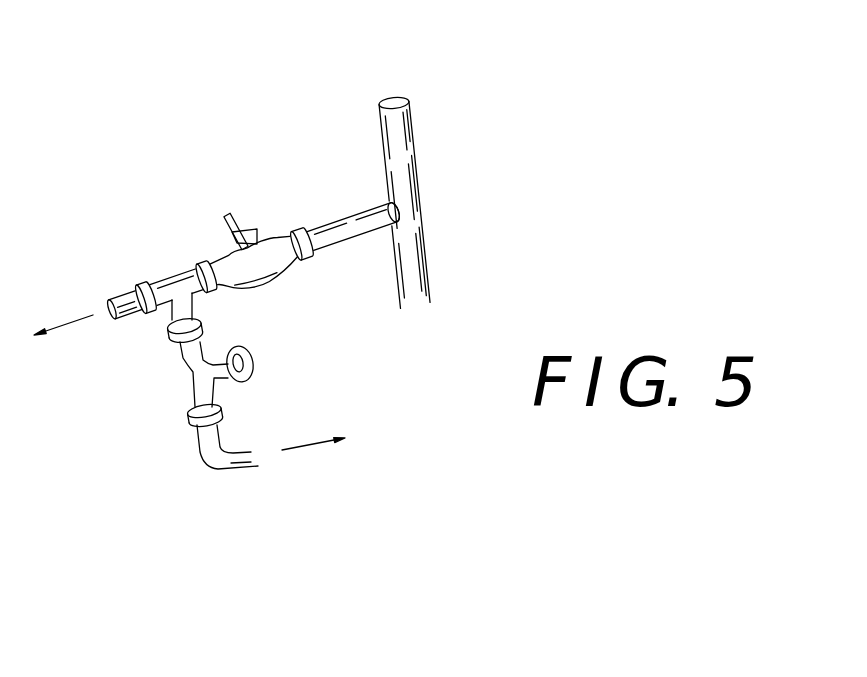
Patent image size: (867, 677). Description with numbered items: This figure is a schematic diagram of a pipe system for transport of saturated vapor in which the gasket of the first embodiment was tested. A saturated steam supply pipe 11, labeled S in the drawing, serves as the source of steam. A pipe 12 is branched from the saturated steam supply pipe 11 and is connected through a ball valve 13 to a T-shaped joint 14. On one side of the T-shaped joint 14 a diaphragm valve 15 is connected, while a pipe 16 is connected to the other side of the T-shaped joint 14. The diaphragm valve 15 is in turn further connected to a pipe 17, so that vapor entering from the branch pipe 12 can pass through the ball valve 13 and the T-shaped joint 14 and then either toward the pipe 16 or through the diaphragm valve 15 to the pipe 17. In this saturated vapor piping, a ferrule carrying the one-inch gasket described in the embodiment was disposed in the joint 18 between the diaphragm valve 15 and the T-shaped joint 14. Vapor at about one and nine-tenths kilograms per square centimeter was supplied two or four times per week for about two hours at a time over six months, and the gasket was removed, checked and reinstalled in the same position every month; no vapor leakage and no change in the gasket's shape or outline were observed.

The saturated steam supply pipe S is at (395, 98).
The saturated steam supply pipe 11 is at (404, 133).
The pipe 12 is at (344, 224).
The ball valve 13 is at (245, 258).
The T-shaped joint 14 is at (177, 278).
The diaphragm valve 15 is at (254, 368).
The pipe 16 is at (120, 305).
The pipe 17 is at (231, 471).
The joint 18 is at (172, 338).